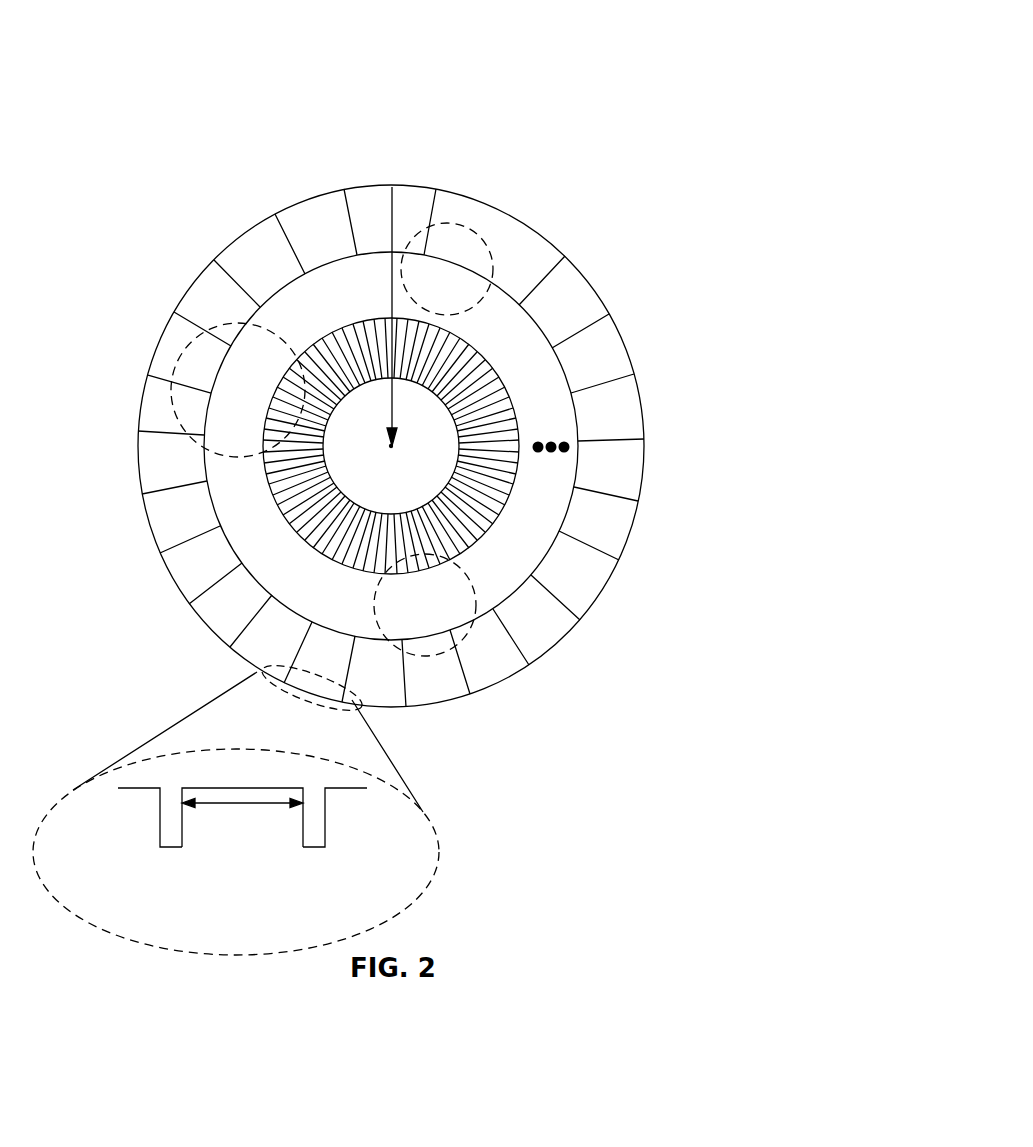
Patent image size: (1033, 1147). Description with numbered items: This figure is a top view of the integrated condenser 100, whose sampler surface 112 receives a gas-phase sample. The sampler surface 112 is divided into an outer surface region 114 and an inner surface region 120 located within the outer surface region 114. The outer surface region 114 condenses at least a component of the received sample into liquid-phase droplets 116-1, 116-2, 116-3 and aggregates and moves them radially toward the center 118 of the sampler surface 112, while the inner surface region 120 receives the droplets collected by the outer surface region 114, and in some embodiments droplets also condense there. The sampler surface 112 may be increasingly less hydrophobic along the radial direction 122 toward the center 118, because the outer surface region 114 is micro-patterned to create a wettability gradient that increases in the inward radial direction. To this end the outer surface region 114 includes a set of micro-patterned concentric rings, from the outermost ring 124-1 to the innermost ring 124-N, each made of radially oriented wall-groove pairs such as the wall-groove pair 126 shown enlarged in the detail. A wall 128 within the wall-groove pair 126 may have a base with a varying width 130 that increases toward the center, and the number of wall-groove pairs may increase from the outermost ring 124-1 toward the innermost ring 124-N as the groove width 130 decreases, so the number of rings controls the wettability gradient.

The integrated condenser 100 is at (543, 48).
The sampler surface 112 is at (228, 247).
The outer surface region 114 is at (657, 704).
The droplet 116-1 is at (477, 276).
The droplet 116-2 is at (185, 428).
The droplet 116-3 is at (442, 652).
The center 118 is at (391, 446).
The inner surface region 120 is at (657, 515).
The radial direction 122 is at (392, 222).
The micro-patterned concentric ring 124-N is at (287, 378).
The micro-patterned concentric ring 124-1 is at (197, 553).
The wall-groove pair 126 is at (222, 870).
The wall 128 is at (182, 822).
The width 130 is at (237, 805).